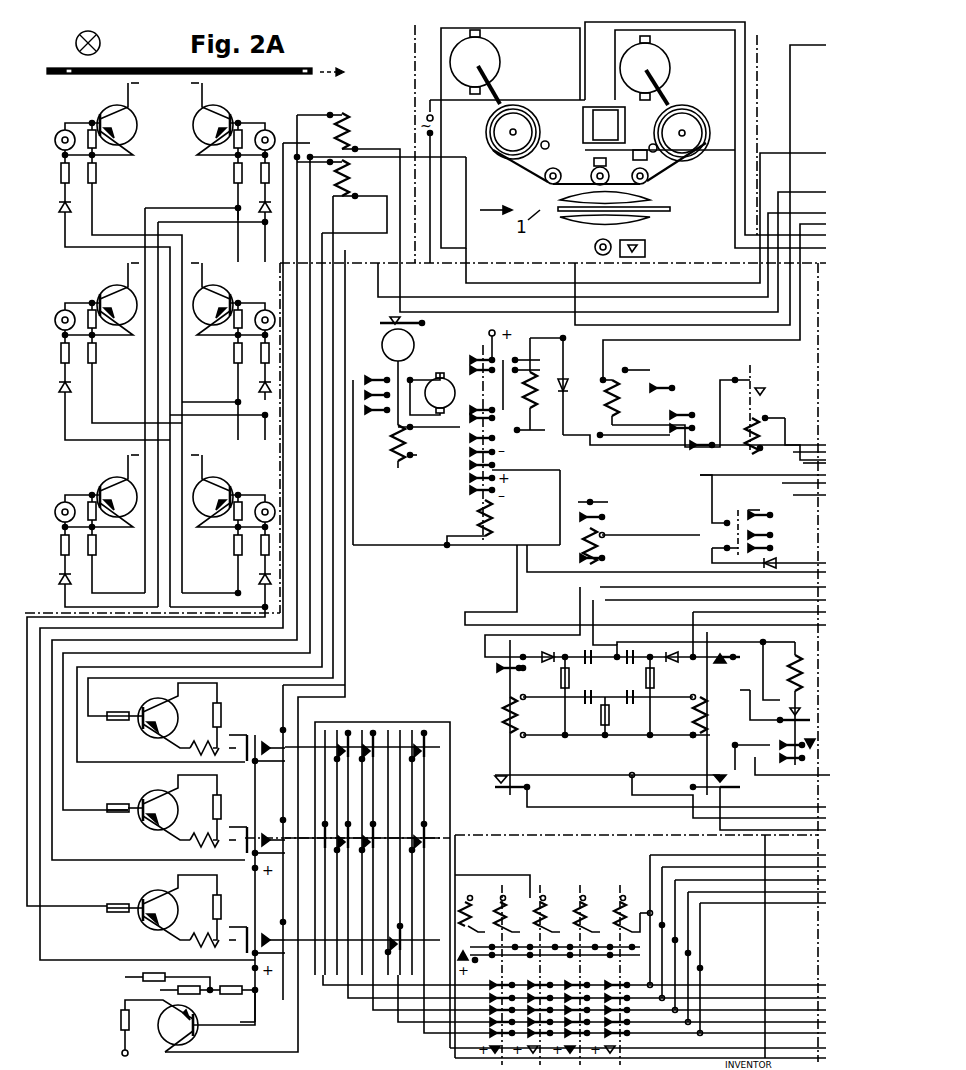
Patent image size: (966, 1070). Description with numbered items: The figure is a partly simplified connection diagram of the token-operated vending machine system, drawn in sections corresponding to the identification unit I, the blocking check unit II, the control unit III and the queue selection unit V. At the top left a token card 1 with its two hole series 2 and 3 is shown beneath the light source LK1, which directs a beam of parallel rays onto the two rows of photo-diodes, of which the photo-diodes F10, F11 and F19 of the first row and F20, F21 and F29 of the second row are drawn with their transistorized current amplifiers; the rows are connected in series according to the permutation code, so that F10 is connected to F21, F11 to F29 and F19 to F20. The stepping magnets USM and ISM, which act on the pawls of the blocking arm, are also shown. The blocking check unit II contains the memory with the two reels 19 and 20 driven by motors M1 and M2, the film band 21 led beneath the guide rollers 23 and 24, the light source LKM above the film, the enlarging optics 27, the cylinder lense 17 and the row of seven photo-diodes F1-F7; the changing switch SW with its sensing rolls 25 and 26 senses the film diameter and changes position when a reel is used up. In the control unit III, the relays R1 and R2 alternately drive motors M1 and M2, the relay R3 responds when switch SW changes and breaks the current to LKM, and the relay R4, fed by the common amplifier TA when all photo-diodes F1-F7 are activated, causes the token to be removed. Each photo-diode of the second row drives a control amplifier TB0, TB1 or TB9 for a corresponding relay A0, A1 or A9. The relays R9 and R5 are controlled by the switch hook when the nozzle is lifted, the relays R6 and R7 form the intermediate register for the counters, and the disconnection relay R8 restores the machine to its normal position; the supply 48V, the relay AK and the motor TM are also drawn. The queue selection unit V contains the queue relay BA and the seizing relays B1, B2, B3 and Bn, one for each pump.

The light source LK1 is at (108, 43).
The token card 1 is at (100, 76).
The hole series 2 is at (70, 76).
The hole series 3 is at (305, 76).
The identification unit I is at (339, 73).
The photo-diode F10 is at (60, 145).
The photo-diode F20 is at (270, 130).
The photo-diode F11 is at (62, 312).
The photo-diode F21 is at (266, 312).
The photo-diode F19 is at (62, 503).
The photo-diode F29 is at (270, 505).
The stepping magnet USM is at (358, 132).
The stepping magnet ISM is at (354, 180).
The blocking check unit II is at (529, 42).
The motor M1 is at (498, 66).
The changing switch SW is at (605, 118).
The reel 19 is at (500, 130).
The sensing roll 25 is at (546, 141).
The sensing roll 26 is at (652, 144).
The motor M2 is at (660, 74).
The reel 20 is at (684, 128).
The film band 21 is at (520, 168).
The light source LKM is at (594, 166).
The guide roller 24 is at (640, 168).
The guide roller 23 is at (548, 184).
The enlarging optics 27 is at (626, 194).
The cylinder lense 17 is at (591, 218).
The photo-diodes F1-F7 is at (632, 240).
The relay AK is at (382, 329).
The timing motor TM is at (452, 380).
The relay R9 is at (398, 380).
The relay R5 is at (545, 375).
The relay R6 is at (608, 400).
The disconnection relay R8 is at (755, 410).
The relay R4 is at (475, 520).
The relay R7 is at (578, 528).
The supply voltage 48V is at (763, 521).
The control unit III is at (397, 619).
The relay R1 is at (523, 690).
The relay R2 is at (695, 693).
The relay R3 is at (778, 665).
The transistorized control amplifier TB0 is at (150, 705).
The transistorized control amplifier TB1 is at (150, 797).
The transistorized control amplifier TB9 is at (148, 897).
The relay A0 is at (392, 750).
The relay A1 is at (386, 841).
The relay A9 is at (418, 947).
The transistorized control current amplifier TA is at (189, 1011).
The queue relay BA is at (472, 906).
The seizing relay B1 is at (507, 889).
The queue selection unit V is at (537, 849).
The seizing relay B2 is at (548, 904).
The seizing relay B3 is at (587, 890).
The seizing relay Bn is at (627, 892).